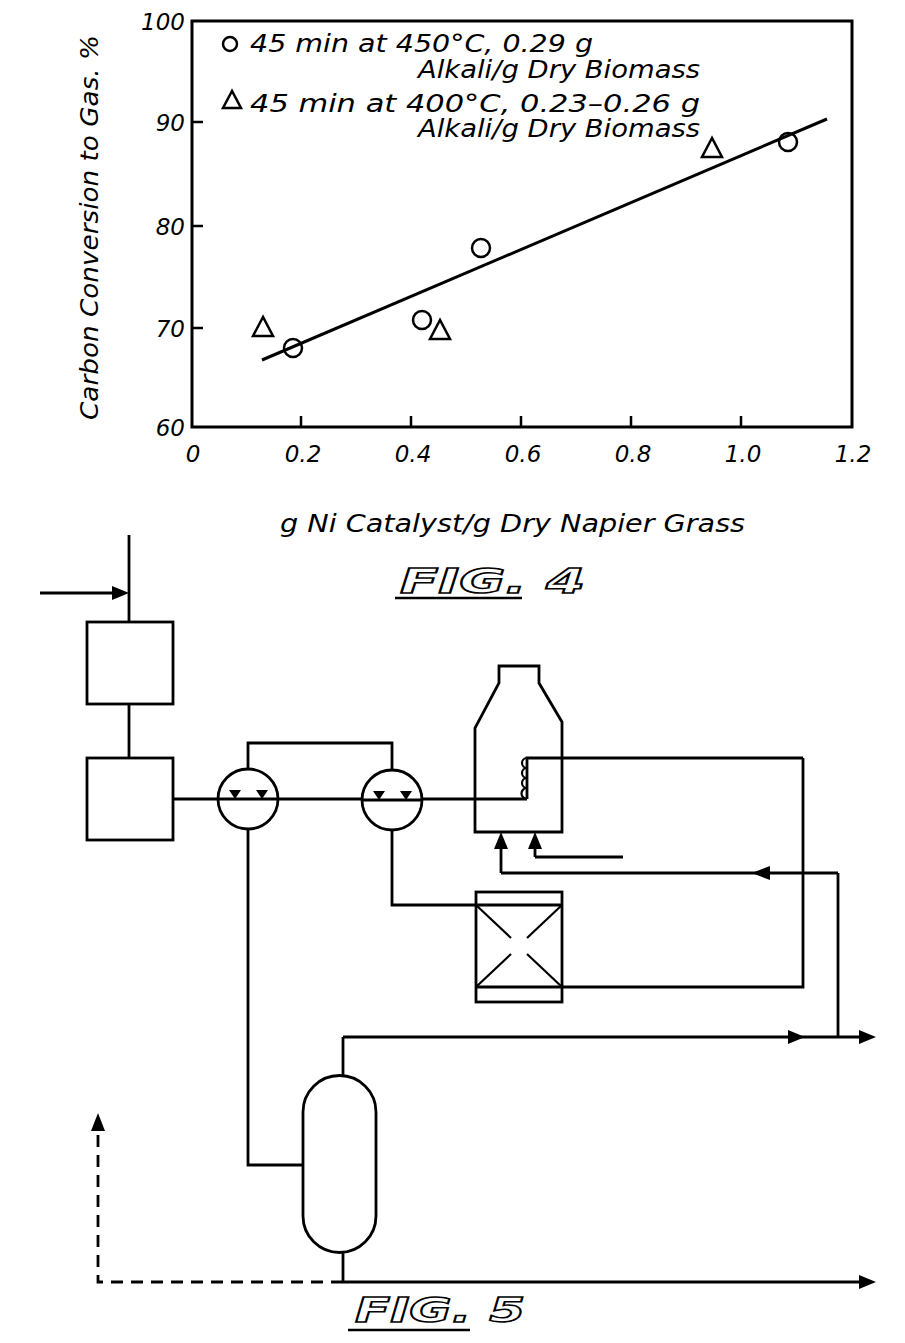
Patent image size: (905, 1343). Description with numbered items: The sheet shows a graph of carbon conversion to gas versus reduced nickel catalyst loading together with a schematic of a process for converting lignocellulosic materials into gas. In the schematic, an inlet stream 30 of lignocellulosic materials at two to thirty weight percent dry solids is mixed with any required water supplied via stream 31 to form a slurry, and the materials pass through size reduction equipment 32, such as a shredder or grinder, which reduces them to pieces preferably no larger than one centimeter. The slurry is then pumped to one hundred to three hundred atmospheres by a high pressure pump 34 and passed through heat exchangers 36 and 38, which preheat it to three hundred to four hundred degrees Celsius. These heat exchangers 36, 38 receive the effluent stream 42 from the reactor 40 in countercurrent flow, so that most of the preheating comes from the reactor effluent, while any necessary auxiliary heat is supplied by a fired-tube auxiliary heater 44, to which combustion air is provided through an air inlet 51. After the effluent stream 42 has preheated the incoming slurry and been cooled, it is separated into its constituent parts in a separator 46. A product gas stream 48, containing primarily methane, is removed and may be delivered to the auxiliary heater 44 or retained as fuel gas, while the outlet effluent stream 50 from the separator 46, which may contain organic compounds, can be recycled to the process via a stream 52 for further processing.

The inlet stream 30 is at (129, 575).
The water stream 31 is at (88, 593).
The size reduction equipment 32 is at (98, 662).
The high pressure pump 34 is at (148, 772).
The heat exchanger 36 is at (235, 815).
The heat exchanger 38 is at (372, 815).
The reactor 40 is at (553, 932).
The effluent stream 42 is at (400, 905).
The fired-tube auxiliary heater 44 is at (545, 745).
The separator 46 is at (360, 1132).
The product gas stream 48 is at (838, 930).
The outlet effluent stream 50 is at (340, 1265).
The air inlet 51 is at (583, 857).
The recycle stream 52 is at (180, 1280).